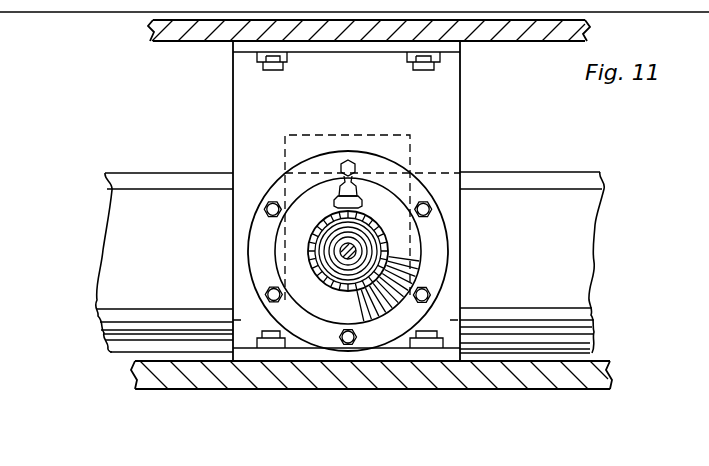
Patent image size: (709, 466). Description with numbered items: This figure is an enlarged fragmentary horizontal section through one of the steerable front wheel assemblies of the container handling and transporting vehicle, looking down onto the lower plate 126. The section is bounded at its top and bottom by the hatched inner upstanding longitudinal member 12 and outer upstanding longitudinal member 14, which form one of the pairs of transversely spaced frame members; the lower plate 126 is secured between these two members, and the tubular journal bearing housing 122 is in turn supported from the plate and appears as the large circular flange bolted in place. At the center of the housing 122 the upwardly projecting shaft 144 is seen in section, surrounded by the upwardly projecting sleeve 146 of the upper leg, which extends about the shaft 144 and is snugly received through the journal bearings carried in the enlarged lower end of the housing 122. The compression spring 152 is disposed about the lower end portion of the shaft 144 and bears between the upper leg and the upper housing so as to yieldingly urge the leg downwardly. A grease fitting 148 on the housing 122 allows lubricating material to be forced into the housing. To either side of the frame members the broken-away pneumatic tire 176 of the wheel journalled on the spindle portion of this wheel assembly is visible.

The inner upstanding longitudinal member 12 is at (541, 30).
The outer upstanding longitudinal member 14 is at (585, 362).
The lower plate 126 is at (432, 92).
The tubular journal bearing housing 122 is at (403, 248).
The compression spring 152 is at (340, 240).
The upwardly projecting sleeve 146 is at (320, 260).
The upwardly projecting shaft 144 is at (355, 262).
The grease fitting 148 is at (349, 195).
The pneumatic tire 176 is at (565, 251).